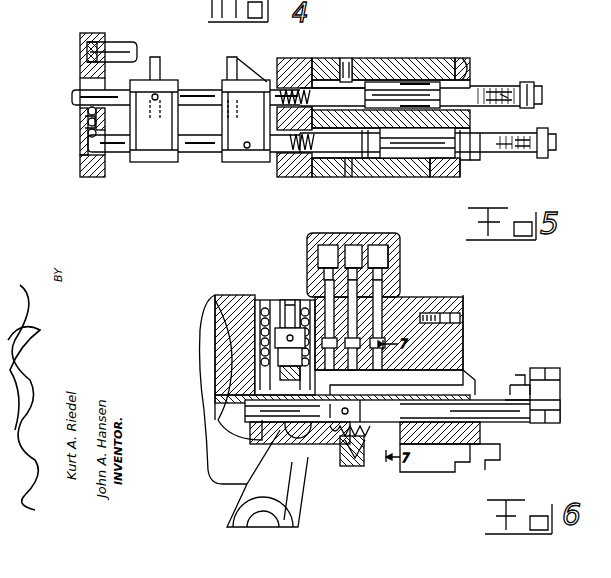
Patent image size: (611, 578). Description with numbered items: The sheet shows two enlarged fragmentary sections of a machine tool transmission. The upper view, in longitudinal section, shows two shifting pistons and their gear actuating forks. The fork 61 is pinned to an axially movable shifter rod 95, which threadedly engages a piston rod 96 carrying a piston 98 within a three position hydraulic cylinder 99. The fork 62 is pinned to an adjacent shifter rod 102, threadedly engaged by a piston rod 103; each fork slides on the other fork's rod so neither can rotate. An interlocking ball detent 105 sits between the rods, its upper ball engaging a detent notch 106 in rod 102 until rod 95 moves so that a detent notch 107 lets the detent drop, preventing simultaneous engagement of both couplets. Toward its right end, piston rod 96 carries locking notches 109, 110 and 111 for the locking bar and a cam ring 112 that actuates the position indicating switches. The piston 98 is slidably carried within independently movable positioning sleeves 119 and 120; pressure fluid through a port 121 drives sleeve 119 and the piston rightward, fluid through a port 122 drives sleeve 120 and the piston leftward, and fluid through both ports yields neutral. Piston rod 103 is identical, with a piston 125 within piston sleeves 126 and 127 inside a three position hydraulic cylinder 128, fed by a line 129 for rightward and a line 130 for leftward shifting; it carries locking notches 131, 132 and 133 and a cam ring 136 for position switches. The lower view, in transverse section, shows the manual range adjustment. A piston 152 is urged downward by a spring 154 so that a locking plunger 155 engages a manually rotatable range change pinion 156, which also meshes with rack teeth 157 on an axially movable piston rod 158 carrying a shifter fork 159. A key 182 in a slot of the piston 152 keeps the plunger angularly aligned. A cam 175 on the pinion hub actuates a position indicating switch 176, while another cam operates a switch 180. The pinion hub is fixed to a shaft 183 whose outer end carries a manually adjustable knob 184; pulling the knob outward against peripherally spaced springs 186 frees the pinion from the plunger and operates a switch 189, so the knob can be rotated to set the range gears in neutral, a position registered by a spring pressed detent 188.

In FIG. 5, the fork 61 is at (235, 60).
In FIG. 5, the fork 62 is at (160, 62).
In FIG. 5, the shifter rod 95 is at (196, 150).
In FIG. 5, the piston rod 96 is at (472, 148).
In FIG. 5, the piston 98 is at (406, 158).
In FIG. 5, the three position hydraulic cylinder 99 is at (332, 166).
In FIG. 5, the shifter rod 102 is at (214, 72).
In FIG. 5, the piston rod 103 is at (478, 88).
In FIG. 5, the ball detent 105 is at (84, 118).
In FIG. 5, the detent notch 106 is at (90, 94).
In FIG. 5, the detent notch 107 is at (110, 138).
In FIG. 5, the locking notch 109 is at (503, 152).
In FIG. 5, the locking notch 110 is at (518, 152).
In FIG. 5, the locking notch 111 is at (530, 150).
In FIG. 5, the cam ring 112 is at (546, 133).
In FIG. 5, the positioning sleeve 119 is at (366, 160).
In FIG. 5, the positioning sleeve 120 is at (440, 172).
In FIG. 5, the port 121 is at (348, 180).
In FIG. 5, the port 122 is at (464, 170).
In FIG. 5, the piston 125 is at (425, 88).
In FIG. 5, the piston sleeve 126 is at (378, 82).
In FIG. 5, the piston sleeve 127 is at (466, 60).
In FIG. 5, the three position hydraulic cylinder 128 is at (340, 64).
In FIG. 5, the line 129 is at (348, 57).
In FIG. 5, the line 130 is at (470, 62).
In FIG. 5, the locking notch 131 is at (480, 106).
In FIG. 5, the locking notch 132 is at (505, 100).
In FIG. 5, the locking notch 133 is at (520, 86).
In FIG. 5, the cam ring 136 is at (535, 90).
In FIG. 6, the piston 152 is at (240, 360).
In FIG. 6, the spring 154 is at (270, 298).
In FIG. 6, the locking plunger 155 is at (258, 385).
In FIG. 6, the range change pinion 156 is at (262, 430).
In FIG. 6, the rack teeth 157 is at (290, 438).
In FIG. 6, the piston rod 158 is at (300, 462).
In FIG. 6, the shifter fork 159 is at (290, 497).
In FIG. 6, the cam 175 is at (382, 346).
In FIG. 6, the position indicating switch 176 is at (355, 252).
In FIG. 6, the position indicating switch 180 is at (396, 256).
In FIG. 6, the key 182 is at (288, 300).
In FIG. 6, the shaft 183 is at (505, 434).
In FIG. 6, the manually adjustable knob 184 is at (546, 380).
In FIG. 6, the springs 186 is at (332, 465).
In FIG. 6, the spring pressed detent 188 is at (372, 466).
In FIG. 6, the switch 189 is at (318, 258).